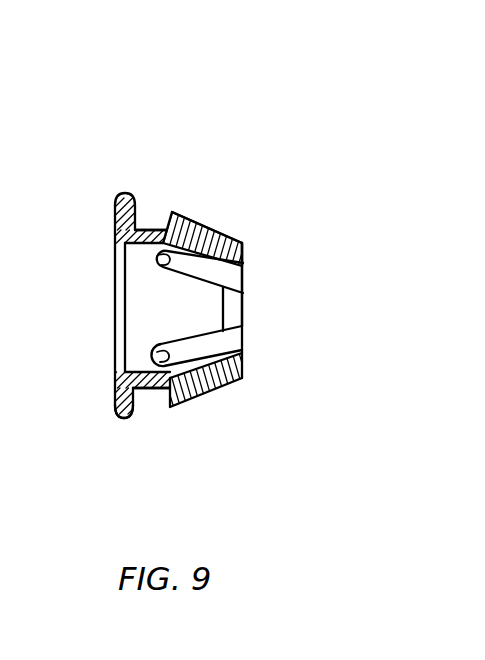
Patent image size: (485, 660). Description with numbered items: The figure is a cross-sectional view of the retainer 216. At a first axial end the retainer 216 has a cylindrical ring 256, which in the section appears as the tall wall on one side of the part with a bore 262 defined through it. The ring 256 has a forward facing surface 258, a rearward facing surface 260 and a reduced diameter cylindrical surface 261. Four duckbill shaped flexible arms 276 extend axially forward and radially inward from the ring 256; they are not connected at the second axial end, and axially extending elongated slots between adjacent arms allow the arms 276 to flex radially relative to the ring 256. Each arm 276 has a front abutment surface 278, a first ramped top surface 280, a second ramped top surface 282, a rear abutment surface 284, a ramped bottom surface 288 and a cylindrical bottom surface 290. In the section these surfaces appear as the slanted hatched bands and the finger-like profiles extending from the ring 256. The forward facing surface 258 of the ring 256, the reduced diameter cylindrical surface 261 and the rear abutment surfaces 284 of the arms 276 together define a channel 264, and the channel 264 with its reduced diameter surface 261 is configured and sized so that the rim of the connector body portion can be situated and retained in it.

The retainer 216 is at (217, 164).
The cylindrical ring 256 is at (117, 422).
The forward facing surface 258 is at (138, 388).
The rearward facing surface 260 is at (112, 402).
The reduced diameter cylindrical surface 261 is at (162, 388).
The bore 262 is at (140, 325).
The channel 264 is at (150, 220).
The flexible arm 276 is at (213, 397).
The front abutment surface 278 is at (243, 253).
The first ramped top surface 280 is at (222, 223).
The second ramped top surface 282 is at (193, 210).
The rear abutment surface 284 is at (162, 227).
The ramped bottom surface 288 is at (190, 258).
The cylindrical bottom surface 290 is at (243, 290).